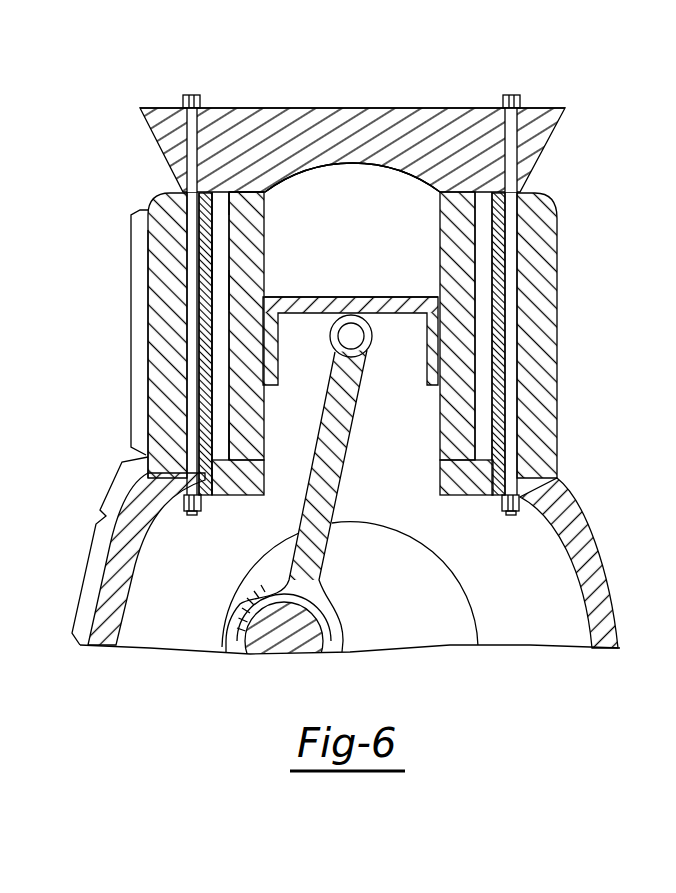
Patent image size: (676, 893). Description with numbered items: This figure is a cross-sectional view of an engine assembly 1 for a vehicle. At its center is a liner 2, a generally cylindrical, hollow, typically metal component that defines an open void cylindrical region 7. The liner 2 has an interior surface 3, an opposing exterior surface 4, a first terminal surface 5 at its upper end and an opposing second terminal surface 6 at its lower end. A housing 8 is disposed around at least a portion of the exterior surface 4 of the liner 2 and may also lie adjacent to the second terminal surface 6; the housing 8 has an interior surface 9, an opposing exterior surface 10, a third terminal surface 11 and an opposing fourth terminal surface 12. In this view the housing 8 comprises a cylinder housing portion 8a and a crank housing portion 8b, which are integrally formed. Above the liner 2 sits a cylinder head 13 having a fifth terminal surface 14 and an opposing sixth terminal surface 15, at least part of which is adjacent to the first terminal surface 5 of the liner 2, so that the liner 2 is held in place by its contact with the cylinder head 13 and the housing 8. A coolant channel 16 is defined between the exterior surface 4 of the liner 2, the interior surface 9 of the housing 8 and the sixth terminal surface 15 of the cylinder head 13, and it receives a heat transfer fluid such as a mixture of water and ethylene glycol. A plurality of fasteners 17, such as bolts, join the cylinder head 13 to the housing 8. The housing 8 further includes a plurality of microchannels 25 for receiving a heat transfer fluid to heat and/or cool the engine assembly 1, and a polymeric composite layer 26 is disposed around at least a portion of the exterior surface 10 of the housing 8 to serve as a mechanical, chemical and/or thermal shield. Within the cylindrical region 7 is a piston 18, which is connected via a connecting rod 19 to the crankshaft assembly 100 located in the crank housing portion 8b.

The engine assembly 1 is at (577, 381).
The liner 2 is at (250, 235).
The interior surface 3 is at (262, 213).
The exterior surface 4 is at (230, 291).
The first terminal surface 5 is at (245, 192).
The second terminal surface 6 is at (232, 452).
The cylindrical region 7 is at (352, 230).
The housing 8 is at (200, 402).
The cylinder housing portion 8a is at (124, 317).
The crank housing portion 8b is at (343, 552).
The interior surface 9 is at (220, 394).
The exterior surface 10 is at (187, 293).
The third terminal surface 11 is at (160, 210).
The fourth terminal surface 12 is at (226, 497).
The cylinder head 13 is at (357, 122).
The fifth terminal surface 14 is at (262, 108).
The sixth terminal surface 15 is at (355, 172).
The coolant channel 16 is at (224, 322).
The fasteners 17 is at (192, 95).
The piston 18 is at (362, 302).
The connecting rod 19 is at (344, 452).
The microchannels 25 is at (212, 264).
The polymeric composite layer 26 is at (163, 256).
The crankshaft assembly 100 is at (415, 581).